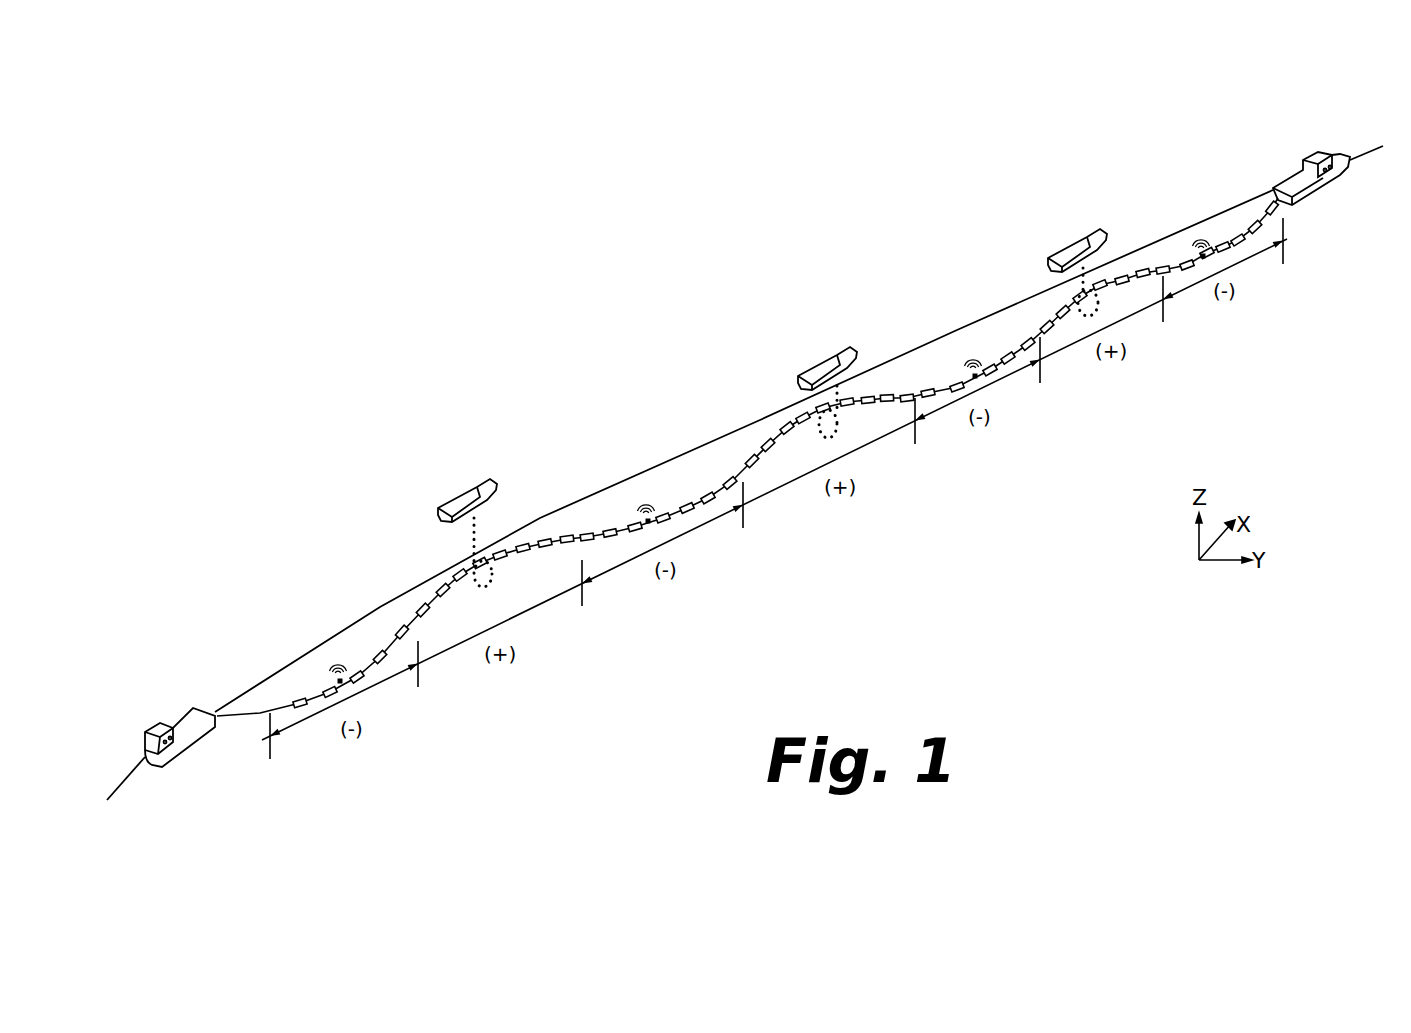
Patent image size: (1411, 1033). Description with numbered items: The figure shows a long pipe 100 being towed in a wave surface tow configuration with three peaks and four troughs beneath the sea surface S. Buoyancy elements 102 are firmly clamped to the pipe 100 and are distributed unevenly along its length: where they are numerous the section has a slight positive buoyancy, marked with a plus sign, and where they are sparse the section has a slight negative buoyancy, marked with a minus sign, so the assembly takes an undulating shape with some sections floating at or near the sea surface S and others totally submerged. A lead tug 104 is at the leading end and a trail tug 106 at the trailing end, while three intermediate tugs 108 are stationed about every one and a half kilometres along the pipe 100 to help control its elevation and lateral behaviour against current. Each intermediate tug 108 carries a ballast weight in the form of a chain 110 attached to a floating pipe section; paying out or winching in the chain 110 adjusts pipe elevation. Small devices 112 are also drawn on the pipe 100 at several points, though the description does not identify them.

The pipe 100 is at (553, 538).
The buoyancy elements 102 is at (748, 460).
The lead tug 104 is at (1313, 153).
The trail tug 106 is at (160, 723).
The intermediate tugs 108 is at (457, 498).
The chain 110 is at (490, 587).
The acoustic positioning device 112 is at (336, 677).
The sea surface S is at (317, 643).